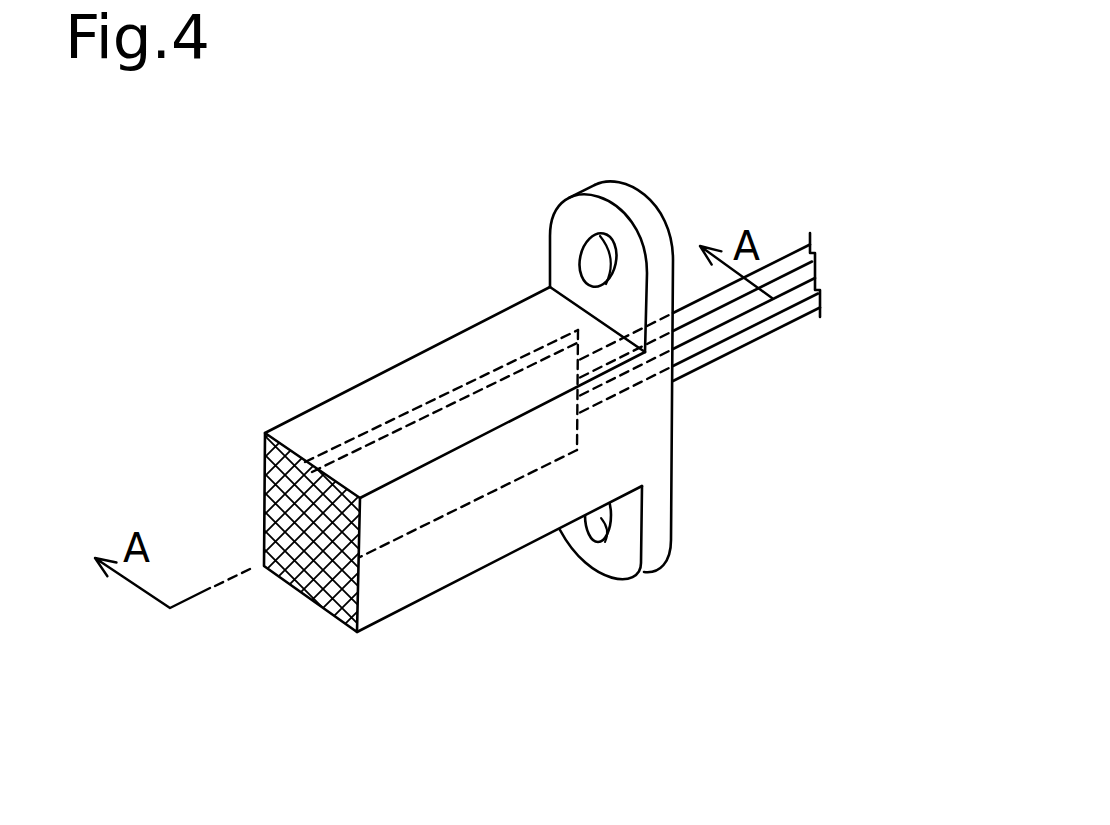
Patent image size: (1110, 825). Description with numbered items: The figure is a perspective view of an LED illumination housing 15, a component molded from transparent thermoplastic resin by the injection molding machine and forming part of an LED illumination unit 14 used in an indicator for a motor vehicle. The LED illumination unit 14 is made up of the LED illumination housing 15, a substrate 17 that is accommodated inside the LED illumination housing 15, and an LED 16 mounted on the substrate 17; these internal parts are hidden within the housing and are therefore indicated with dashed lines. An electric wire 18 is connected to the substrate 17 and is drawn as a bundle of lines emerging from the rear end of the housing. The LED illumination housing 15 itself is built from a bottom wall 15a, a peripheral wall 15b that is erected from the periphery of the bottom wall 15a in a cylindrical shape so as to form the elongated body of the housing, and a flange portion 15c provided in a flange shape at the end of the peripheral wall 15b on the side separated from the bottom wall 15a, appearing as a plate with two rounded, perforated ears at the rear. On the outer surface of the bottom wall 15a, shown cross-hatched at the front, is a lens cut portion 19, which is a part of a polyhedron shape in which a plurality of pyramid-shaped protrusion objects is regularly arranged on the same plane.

The LED illumination unit 14 is at (545, 68).
The LED illumination housing 15 is at (525, 286).
The bottom wall 15a is at (329, 612).
The peripheral wall 15b is at (400, 390).
The flange portion 15c is at (652, 242).
The LED 16 is at (360, 533).
The substrate 17 is at (490, 470).
The electric wire 18 is at (710, 350).
The lens cut portion 19 is at (276, 580).